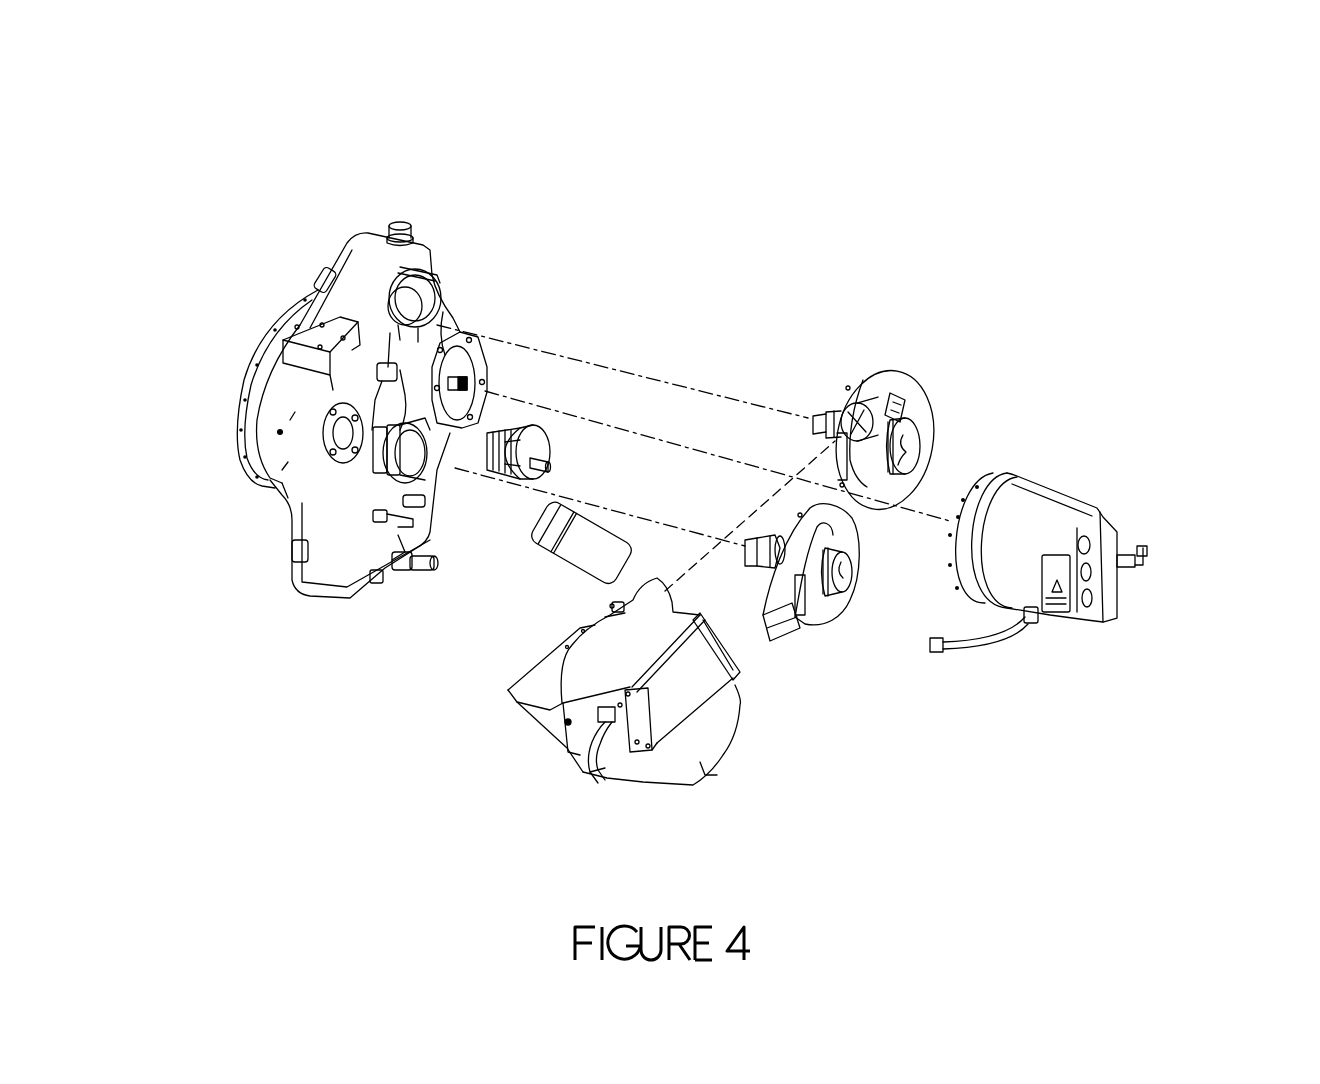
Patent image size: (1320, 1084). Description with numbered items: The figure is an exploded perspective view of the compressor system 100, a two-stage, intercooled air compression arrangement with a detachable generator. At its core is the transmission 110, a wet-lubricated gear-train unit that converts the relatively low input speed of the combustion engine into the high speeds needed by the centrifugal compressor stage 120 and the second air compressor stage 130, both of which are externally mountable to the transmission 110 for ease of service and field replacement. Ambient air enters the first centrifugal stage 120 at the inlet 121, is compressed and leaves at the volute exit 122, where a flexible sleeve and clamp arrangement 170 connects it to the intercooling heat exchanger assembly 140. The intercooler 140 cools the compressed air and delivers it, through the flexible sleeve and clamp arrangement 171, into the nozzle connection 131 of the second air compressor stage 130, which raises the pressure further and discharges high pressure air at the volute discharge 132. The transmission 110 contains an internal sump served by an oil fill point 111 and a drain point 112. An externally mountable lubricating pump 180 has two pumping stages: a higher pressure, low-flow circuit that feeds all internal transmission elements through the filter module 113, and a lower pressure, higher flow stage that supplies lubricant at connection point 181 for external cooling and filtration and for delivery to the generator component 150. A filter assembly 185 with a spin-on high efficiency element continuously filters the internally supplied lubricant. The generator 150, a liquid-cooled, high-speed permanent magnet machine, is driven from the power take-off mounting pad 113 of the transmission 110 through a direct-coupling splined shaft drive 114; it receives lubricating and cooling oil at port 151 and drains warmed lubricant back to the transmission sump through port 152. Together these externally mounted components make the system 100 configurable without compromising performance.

The compressor system 100 is at (714, 64).
The transmission 110 is at (406, 386).
The oil fill point 111 is at (468, 189).
The drain point 112 is at (410, 611).
The filter module / power take-off mounting pad 113 is at (542, 302).
The direct-coupling splined shaft drive 114 is at (553, 359).
The centrifugal compressor stage 120 is at (936, 401).
The inlet 121 is at (982, 404).
The volute exit 122 is at (798, 372).
The second air compressor stage 130 is at (852, 606).
The nozzle connection 131 is at (894, 587).
The volute discharge 132 is at (826, 642).
The intercooling heat exchanger assembly 140 is at (683, 699).
The generator component 150 is at (1065, 509).
The port 151 is at (1189, 502).
The port 152 is at (993, 670).
The flexible sleeve and clamp arrangement 170 is at (491, 279).
The flexible sleeve and clamp arrangement 171 is at (259, 440).
The lubricating pump 180 is at (596, 407).
The connection point 181 is at (622, 426).
The filter assembly 185 is at (552, 556).